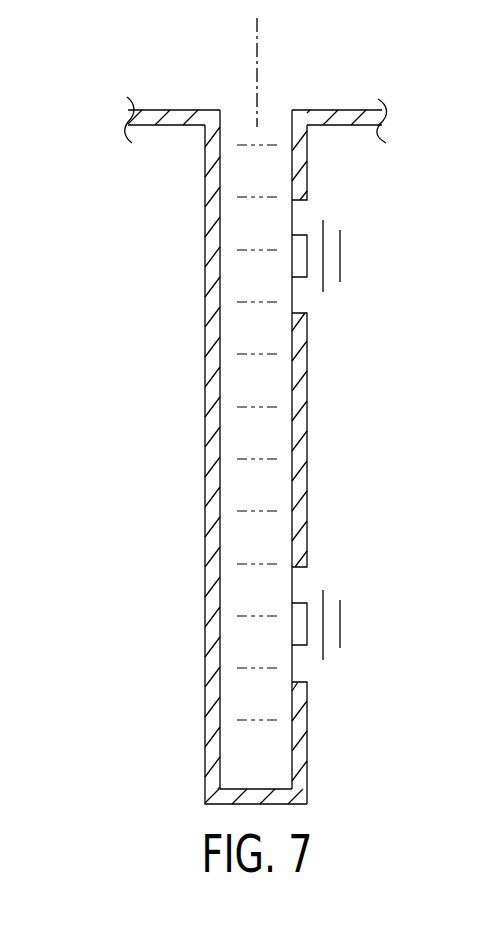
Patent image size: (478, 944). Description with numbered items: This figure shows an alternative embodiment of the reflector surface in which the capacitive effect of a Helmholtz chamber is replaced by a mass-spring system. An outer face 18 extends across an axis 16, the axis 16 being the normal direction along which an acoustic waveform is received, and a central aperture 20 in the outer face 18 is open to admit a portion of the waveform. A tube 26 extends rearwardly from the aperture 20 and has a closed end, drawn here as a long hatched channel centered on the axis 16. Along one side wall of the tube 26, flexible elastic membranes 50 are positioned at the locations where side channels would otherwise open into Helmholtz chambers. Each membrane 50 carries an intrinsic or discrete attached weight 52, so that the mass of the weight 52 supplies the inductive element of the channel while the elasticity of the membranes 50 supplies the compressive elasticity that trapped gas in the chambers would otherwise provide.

The axis 16 is at (256, 70).
The outer face 18 is at (177, 110).
The central aperture 20 is at (277, 104).
The tube 26 is at (205, 480).
The flexible elastic membranes 50 is at (293, 218).
The weights 52 is at (308, 255).